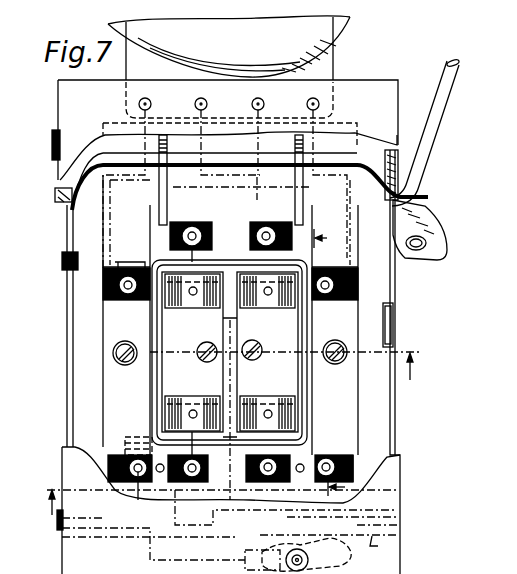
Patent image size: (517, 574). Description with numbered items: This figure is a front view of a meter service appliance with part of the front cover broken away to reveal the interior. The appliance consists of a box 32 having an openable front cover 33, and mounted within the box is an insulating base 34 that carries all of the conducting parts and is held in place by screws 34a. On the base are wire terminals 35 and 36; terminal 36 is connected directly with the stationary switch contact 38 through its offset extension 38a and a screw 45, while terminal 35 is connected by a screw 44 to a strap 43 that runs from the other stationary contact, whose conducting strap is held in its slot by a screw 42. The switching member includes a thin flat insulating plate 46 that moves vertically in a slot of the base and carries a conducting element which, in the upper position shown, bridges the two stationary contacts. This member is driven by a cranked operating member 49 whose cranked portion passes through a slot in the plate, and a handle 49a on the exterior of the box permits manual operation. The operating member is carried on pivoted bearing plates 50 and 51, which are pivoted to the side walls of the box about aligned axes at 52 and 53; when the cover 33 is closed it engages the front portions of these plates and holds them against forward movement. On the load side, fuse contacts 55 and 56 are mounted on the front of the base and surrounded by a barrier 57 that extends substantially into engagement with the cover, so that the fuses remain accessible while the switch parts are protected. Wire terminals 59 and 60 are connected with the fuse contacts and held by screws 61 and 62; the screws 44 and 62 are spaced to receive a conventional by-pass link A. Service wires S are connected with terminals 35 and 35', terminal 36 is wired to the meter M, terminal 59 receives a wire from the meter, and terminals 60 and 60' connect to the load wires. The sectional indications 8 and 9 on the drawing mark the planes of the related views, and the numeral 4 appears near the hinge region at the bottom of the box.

The meter M is at (352, 20).
The box 32 is at (396, 438).
The front cover 33 is at (392, 100).
The insulating base 34 is at (358, 400).
The screws 34a is at (337, 376).
The wire terminal 35 is at (231, 467).
The wire terminal 35' is at (367, 463).
The wire terminal 36 is at (104, 292).
The stationary switch contact 38 is at (136, 268).
The offset extension 38a is at (128, 266).
The screw 42 is at (197, 355).
The strap 43 is at (135, 441).
The screw 44 is at (130, 498).
The screw 45 is at (118, 302).
The insulating plate 46 is at (162, 211).
The cranked operating member 49 is at (238, 164).
The handle 49a is at (445, 99).
The bearing plate 50 is at (392, 232).
The bearing plate 51 is at (70, 227).
The pivot axis 52 is at (388, 250).
The pivot axis 53 is at (75, 258).
The fuse contact 55 is at (230, 404).
The fuse contact 56 is at (170, 310).
The barrier 57 is at (238, 263).
The wire terminal 59 is at (196, 218).
The wire terminal 60 is at (158, 492).
The wire terminal 60' is at (299, 478).
The screw 61 is at (200, 238).
The screw 62 is at (208, 471).
The hinge 4 is at (320, 537).
The section line 8- 8 is at (335, 362).
The section line 9- 9 is at (229, 443).
The service wires S is at (229, 530).
The by-pass link A is at (147, 499).